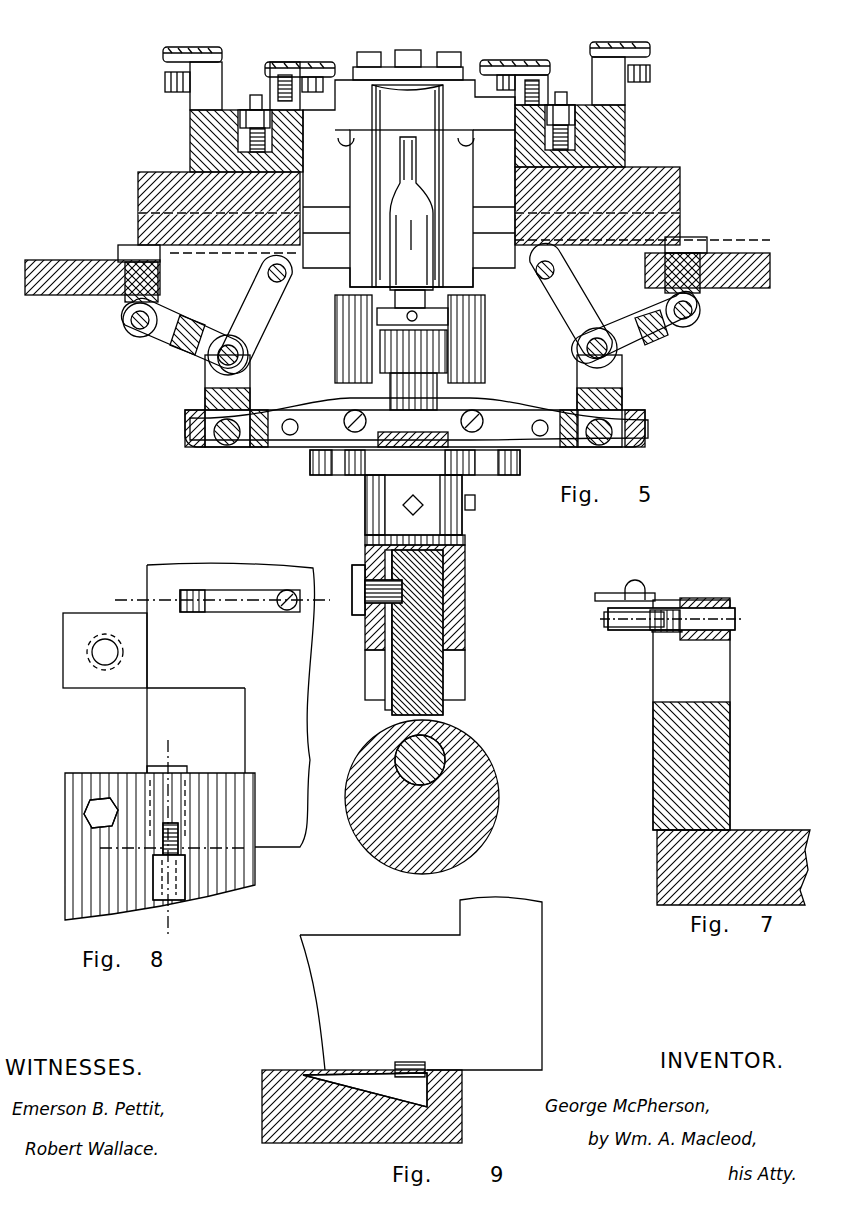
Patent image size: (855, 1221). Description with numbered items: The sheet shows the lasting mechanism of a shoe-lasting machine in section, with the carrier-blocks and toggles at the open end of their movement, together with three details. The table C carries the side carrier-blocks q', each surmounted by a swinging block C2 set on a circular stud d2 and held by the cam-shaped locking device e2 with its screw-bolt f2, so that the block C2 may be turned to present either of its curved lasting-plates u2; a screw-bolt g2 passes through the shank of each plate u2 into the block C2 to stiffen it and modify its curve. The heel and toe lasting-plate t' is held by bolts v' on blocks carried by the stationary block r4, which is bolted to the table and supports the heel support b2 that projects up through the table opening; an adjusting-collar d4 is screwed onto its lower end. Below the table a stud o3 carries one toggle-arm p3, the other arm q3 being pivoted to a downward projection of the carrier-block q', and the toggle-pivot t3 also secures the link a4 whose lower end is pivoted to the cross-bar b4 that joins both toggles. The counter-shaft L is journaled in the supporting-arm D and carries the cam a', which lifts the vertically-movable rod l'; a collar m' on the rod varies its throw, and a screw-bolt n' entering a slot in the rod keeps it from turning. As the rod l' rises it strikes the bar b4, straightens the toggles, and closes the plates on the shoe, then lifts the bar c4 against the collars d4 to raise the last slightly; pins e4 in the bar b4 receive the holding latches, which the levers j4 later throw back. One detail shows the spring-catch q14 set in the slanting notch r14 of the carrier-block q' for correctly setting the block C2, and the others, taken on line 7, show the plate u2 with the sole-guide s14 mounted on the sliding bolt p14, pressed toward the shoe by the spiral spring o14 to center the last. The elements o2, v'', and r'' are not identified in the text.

In FIG. 5, the table C is at (740, 262).
In FIG. 5, the carrier-block q' is at (413, 206).
In FIG. 8, the carrier-block q' is at (220, 730).
In FIG. 7, the carrier-block q' is at (733, 839).
In FIG. 9, the carrier-block q' is at (386, 1106).
In FIG. 5, the swinging block C2 is at (192, 140).
In FIG. 8, the swinging block C2 is at (189, 705).
In FIG. 7, the swinging block C2 is at (706, 715).
In FIG. 9, the swinging block C2 is at (421, 983).
In FIG. 5, the block o2 is at (627, 137).
In FIG. 5, the vertical projection d2 is at (412, 143).
In FIG. 5, the cam-shaped locking device e2 is at (246, 108).
In FIG. 5, the screw-bolt f2 is at (595, 78).
In FIG. 5, the lasting-plate u2 is at (192, 48).
In FIG. 8, the lasting-plate u2 is at (160, 843).
In FIG. 7, the lasting-plate u2 is at (612, 612).
In FIG. 5, the screw-bolt g2 is at (278, 80).
In FIG. 5, the lasting-plate t' is at (408, 52).
In FIG. 5, the bolt v' is at (369, 48).
In FIG. 5, the bolt v'' is at (431, 44).
In FIG. 5, the head block r'' is at (409, 183).
In FIG. 5, the stationary block r4 is at (378, 178).
In FIG. 5, the heel support b2 is at (416, 212).
In FIG. 5, the adjusting-collar d4 is at (410, 350).
In FIG. 5, the cross-bar b4 is at (646, 428).
In FIG. 5, the link a4 is at (250, 380).
In FIG. 5, the toggle-arm q3 is at (415, 308).
In FIG. 5, the toggle-pivot t3 is at (250, 353).
In FIG. 5, the toggle-arm p3 is at (172, 350).
In FIG. 5, the stud o3 is at (122, 308).
In FIG. 5, the lever j4 is at (358, 408).
In FIG. 5, the pin e4 is at (292, 419).
In FIG. 5, the bar c4 is at (415, 453).
In FIG. 5, the collar m' is at (443, 505).
In FIG. 5, the supporting-arm D is at (466, 590).
In FIG. 5, the vertically-movable rod l' is at (438, 632).
In FIG. 5, the screw-bolt n' is at (366, 588).
In FIG. 5, the counter-shaft L is at (430, 762).
In FIG. 5, the cam a' is at (455, 754).
In FIG. 8, the spring-catch q14 is at (195, 596).
In FIG. 9, the spring-catch q14 is at (414, 1062).
In FIG. 8, the section line 7 is at (169, 831).
In FIG. 8, the sole-guide s14 is at (178, 890).
In FIG. 7, the sole-guide s14 is at (606, 594).
In FIG. 7, the spiral spring o14 is at (668, 633).
In FIG. 7, the sliding bolt p14 is at (620, 628).
In FIG. 9, the slanting notch r14 is at (365, 1090).